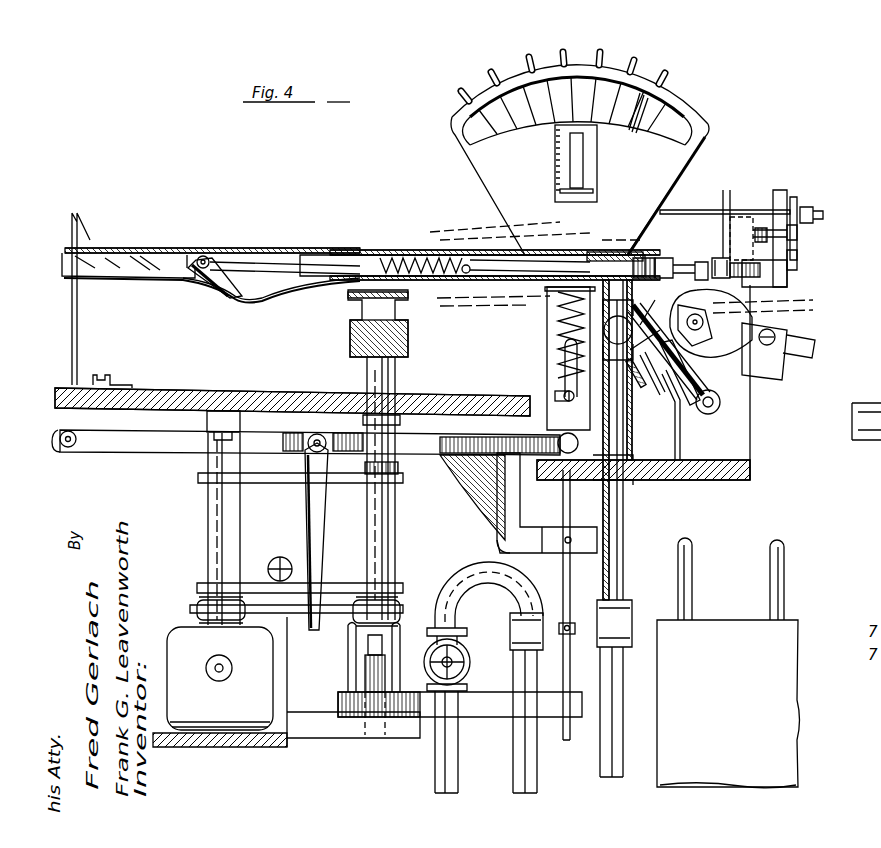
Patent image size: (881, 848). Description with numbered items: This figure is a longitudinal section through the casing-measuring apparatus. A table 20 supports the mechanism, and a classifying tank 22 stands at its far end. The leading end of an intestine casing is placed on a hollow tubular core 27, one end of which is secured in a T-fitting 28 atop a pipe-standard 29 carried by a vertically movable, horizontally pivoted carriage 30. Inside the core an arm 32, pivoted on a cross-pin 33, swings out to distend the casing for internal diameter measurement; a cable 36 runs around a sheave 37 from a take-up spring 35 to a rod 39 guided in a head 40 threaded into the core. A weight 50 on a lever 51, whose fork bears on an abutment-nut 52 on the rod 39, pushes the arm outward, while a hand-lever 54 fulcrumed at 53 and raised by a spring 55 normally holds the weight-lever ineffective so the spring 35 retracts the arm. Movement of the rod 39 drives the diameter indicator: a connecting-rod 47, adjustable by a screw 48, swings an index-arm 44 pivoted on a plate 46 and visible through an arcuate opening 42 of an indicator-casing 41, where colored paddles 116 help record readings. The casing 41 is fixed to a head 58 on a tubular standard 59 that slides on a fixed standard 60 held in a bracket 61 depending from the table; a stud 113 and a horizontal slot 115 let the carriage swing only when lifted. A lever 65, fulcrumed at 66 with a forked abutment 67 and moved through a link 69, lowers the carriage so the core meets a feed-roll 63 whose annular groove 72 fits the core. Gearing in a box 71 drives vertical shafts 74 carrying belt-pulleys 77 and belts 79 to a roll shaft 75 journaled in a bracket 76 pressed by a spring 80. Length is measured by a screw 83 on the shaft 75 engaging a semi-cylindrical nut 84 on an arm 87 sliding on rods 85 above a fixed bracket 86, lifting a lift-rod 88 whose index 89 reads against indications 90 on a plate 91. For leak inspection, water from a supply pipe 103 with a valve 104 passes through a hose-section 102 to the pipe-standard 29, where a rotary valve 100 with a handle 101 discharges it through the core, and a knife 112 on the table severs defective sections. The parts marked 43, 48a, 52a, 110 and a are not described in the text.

The table 20 is at (235, 390).
The classifying tank 22 is at (728, 663).
The core 27 is at (440, 250).
The T-fitting 28 is at (655, 256).
The pipe-standard 29 is at (625, 506).
The carriage 30 is at (752, 468).
The arm 32 is at (226, 294).
The cross-pin 33 is at (185, 280).
The take-up spring 35 is at (392, 250).
The cable 36 is at (275, 264).
The sheave 37 is at (204, 256).
The rod 39 is at (645, 258).
The head 40 is at (720, 258).
The indicator-casing 41 is at (690, 110).
The arcuate opening 42 is at (642, 100).
The tabs 43 is at (465, 92).
The index-arm 44 is at (650, 118).
The plate 46 is at (594, 194).
The connecting-rod 47 is at (684, 210).
The screw 48 is at (797, 232).
The block 48a is at (760, 228).
The weight 50 is at (782, 360).
The lever 51 is at (735, 302).
The abutment-nut 52 is at (727, 230).
The rod 52a is at (500, 245).
The fulcrum 53 is at (721, 402).
The hand-lever 54 is at (700, 412).
The spring 55 is at (672, 418).
The head 58 is at (550, 258).
The tubular standard 59 is at (570, 358).
The standard 60 is at (558, 503).
The bracket 61 is at (530, 540).
The feed-roll 63 is at (350, 335).
The lever 65 is at (452, 445).
The fulcrum 66 is at (69, 451).
The forked abutment 67 is at (578, 442).
The link 69 is at (310, 524).
The gear box 71 is at (220, 678).
The concave annular groove 72 is at (350, 306).
The vertical drive-shaft 74 is at (197, 593).
The feed-roll shaft 75 is at (385, 415).
The bracket 76 is at (396, 543).
The belt-pulley 77 is at (197, 605).
The belt 79 is at (318, 628).
The spring 80 is at (278, 560).
The screw 83 is at (366, 672).
The semi-cylindrical nut 84 is at (372, 705).
The rods 85 is at (232, 745).
The fixed bracket 86 is at (312, 738).
The arm 87 is at (484, 705).
The lift-rod 88 is at (570, 664).
The index 89 is at (572, 622).
The length-indications 90 is at (555, 150).
The plate 91 is at (583, 172).
The rotary valve 100 is at (655, 361).
The handle 101 is at (447, 298).
The hose-section 102 is at (537, 785).
The water-supply pipe 103 is at (458, 780).
The valve 104 is at (466, 670).
The spring 110 is at (560, 350).
The knife 112 is at (78, 224).
The stud 113 is at (568, 395).
The horizontal slot 115 is at (555, 396).
The paddles 116 is at (572, 43).
The arm a is at (211, 277).